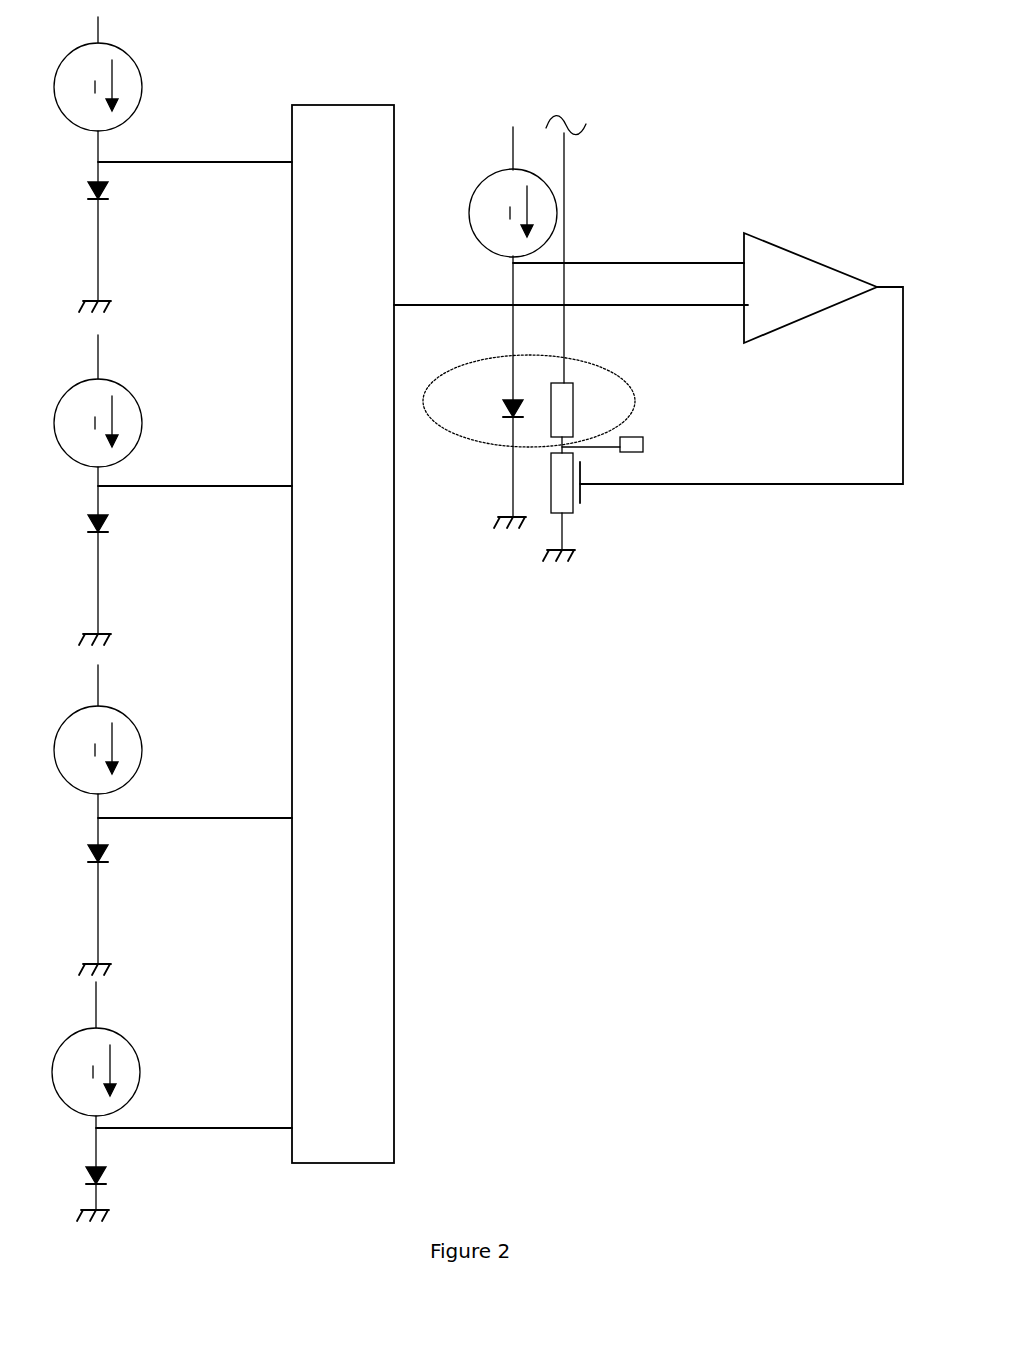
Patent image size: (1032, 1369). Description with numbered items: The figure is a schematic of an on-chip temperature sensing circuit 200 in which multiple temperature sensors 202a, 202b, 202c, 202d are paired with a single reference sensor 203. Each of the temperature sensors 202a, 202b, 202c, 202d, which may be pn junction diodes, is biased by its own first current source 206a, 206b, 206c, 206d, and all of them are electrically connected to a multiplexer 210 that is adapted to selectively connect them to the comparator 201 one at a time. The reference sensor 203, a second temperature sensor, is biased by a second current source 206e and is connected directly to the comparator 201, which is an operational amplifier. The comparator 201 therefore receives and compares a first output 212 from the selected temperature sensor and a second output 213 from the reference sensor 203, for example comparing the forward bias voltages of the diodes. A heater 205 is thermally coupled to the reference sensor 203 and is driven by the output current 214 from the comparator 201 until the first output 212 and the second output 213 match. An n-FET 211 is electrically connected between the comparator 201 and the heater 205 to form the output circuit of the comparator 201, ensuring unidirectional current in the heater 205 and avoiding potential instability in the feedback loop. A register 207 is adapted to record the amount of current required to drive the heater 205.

The temperature sensing circuit 200 is at (738, 132).
The comparator 201 is at (784, 245).
The temperature sensor 202a is at (100, 183).
The temperature sensor 202b is at (100, 513).
The temperature sensor 202c is at (100, 843).
The temperature sensor 202d is at (94, 1165).
The reference sensor 203 is at (513, 400).
The heater 205 is at (573, 402).
The first current source 206a is at (128, 53).
The first current source 206b is at (126, 401).
The first current source 206c is at (130, 729).
The first current source 206d is at (124, 1049).
The second current source 206e is at (485, 180).
The register 207 is at (643, 443).
The multiplexer 210 is at (355, 412).
The n-FET 211 is at (583, 497).
The first output 212 is at (723, 305).
The second output 213 is at (712, 263).
The output current 214 is at (893, 282).